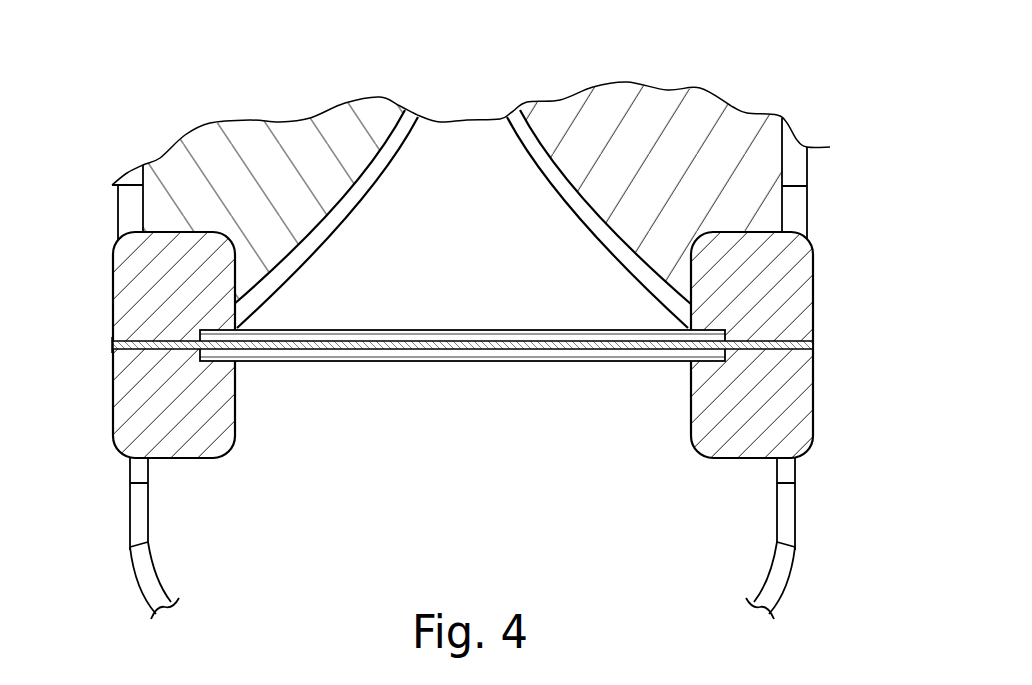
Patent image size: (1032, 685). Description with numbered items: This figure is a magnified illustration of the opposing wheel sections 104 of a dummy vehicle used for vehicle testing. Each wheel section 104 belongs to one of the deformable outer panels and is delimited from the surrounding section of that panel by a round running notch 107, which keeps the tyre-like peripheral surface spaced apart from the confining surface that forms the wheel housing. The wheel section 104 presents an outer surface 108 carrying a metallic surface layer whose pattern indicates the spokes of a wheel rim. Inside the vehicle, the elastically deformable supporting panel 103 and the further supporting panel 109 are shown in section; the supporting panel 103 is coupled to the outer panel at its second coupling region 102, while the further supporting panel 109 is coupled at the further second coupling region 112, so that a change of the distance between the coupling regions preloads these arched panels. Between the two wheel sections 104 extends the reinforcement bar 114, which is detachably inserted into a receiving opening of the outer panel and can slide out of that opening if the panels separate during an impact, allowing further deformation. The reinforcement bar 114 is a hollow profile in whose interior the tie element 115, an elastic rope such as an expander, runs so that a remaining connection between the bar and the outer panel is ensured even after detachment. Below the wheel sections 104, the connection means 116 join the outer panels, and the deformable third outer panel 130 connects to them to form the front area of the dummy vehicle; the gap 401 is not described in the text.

The second coupling region 102 is at (697, 328).
The supporting panel 103 is at (734, 145).
The wheel section 104 is at (815, 282).
The running notch 107 is at (798, 205).
The outer surface 108 is at (813, 330).
The further supporting panel 109 is at (257, 147).
The further second coupling region 112 is at (233, 318).
The reinforcement bar 114 is at (467, 363).
The tie element 115 is at (330, 363).
The connection means 116 is at (780, 540).
The third outer panel 130 is at (773, 572).
The gap 401 is at (223, 365).